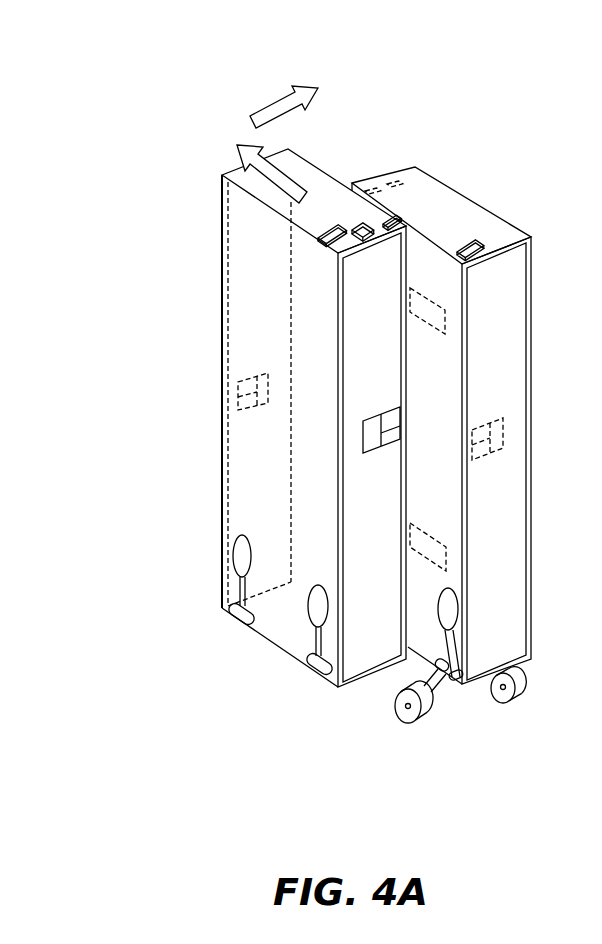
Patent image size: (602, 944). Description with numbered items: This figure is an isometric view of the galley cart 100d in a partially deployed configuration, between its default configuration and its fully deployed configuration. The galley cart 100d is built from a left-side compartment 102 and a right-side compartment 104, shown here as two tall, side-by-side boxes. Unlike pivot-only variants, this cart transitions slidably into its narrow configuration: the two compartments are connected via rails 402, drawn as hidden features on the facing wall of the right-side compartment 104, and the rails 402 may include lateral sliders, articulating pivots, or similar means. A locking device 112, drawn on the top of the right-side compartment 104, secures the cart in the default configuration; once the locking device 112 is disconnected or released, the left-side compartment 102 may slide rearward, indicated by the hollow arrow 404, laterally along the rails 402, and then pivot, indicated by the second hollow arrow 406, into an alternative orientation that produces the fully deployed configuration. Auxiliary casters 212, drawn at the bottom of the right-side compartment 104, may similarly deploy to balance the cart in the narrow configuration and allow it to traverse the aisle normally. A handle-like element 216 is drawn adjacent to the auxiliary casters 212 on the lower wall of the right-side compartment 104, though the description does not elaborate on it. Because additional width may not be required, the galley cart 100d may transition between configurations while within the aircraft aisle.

The galley cart 100d is at (108, 97).
The left-side compartment 102 is at (282, 623).
The right-side compartment 104 is at (425, 190).
The locking device 112 is at (477, 247).
The auxiliary casters 212 is at (405, 720).
The handle 216 is at (448, 607).
The rails 402 is at (427, 315).
The slide 404 is at (236, 150).
The pivot 406 is at (298, 102).